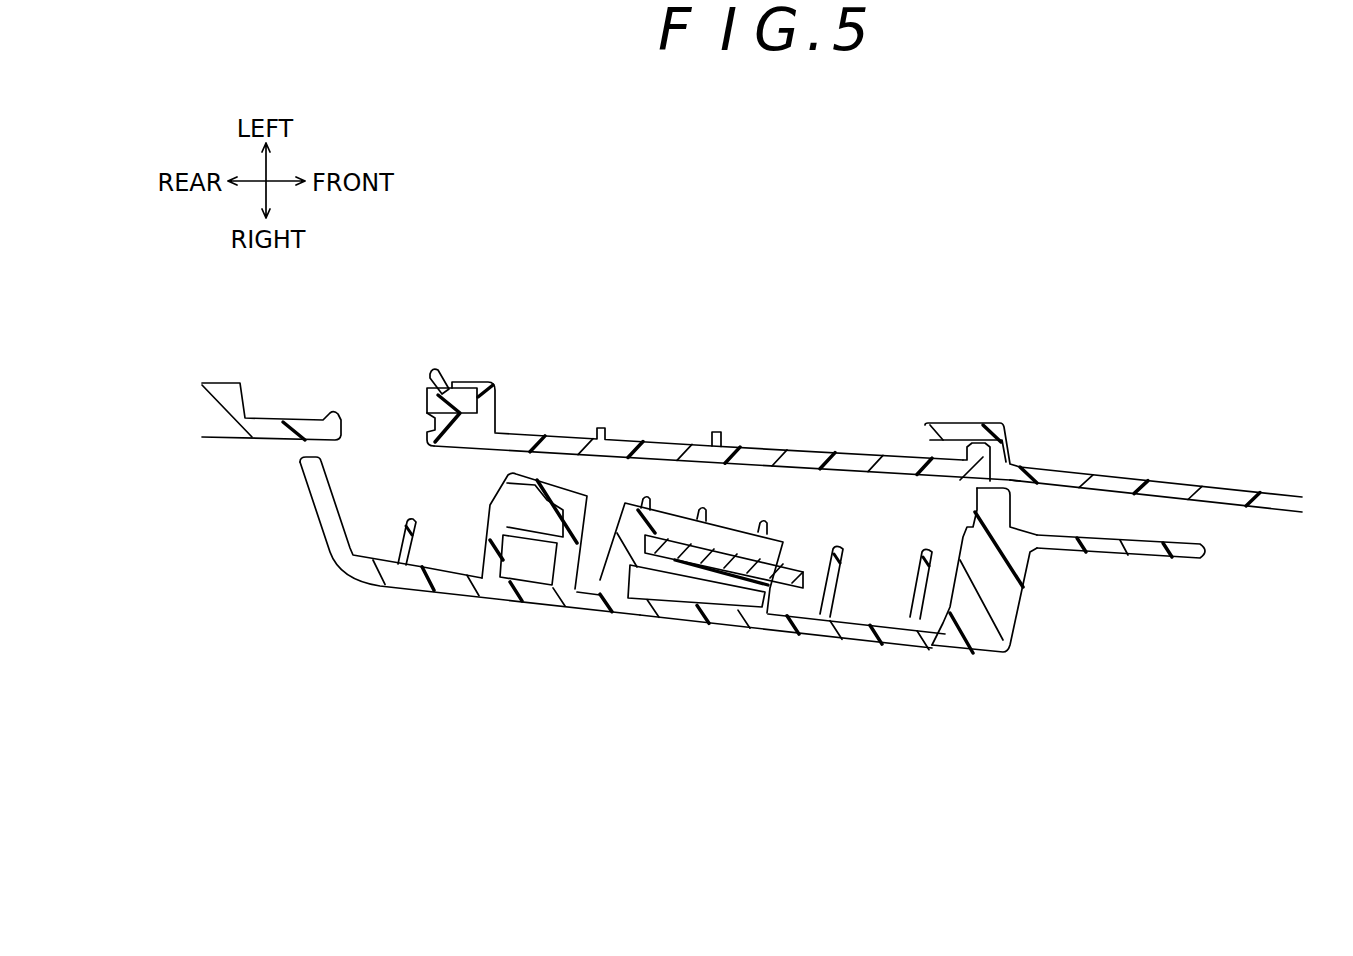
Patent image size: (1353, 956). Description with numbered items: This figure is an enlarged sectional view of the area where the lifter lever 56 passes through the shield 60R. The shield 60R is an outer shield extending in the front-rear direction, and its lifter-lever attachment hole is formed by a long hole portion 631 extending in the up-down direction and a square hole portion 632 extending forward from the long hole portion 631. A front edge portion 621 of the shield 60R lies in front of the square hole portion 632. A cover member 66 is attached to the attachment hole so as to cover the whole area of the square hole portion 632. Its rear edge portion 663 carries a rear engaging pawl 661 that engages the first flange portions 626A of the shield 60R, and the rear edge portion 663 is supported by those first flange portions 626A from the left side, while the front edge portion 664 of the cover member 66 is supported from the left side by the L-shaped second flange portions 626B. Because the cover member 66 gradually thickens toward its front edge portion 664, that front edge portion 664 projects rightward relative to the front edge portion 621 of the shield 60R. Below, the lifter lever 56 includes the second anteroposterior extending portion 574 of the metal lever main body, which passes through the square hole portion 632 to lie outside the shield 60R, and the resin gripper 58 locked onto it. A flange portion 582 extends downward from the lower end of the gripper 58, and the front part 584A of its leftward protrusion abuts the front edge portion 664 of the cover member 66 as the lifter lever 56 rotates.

The shield 60R is at (1283, 497).
The cover member 66 is at (657, 448).
The rear engaging pawl 661 is at (473, 382).
The rear edge portion 663 is at (472, 437).
The front edge portion 664 is at (974, 448).
The first flange portion 626A is at (448, 383).
The second flange portion 626B is at (945, 430).
The front edge portion 621 is at (1020, 464).
The long hole portion 631 is at (384, 404).
The square hole portion 632 is at (721, 417).
The lifter lever 56 is at (586, 620).
The gripper 58 is at (862, 635).
The second anteroposterior extending portion 574 is at (715, 562).
The front part of the protrusion 584A is at (997, 503).
The flange portion 582 is at (1143, 550).